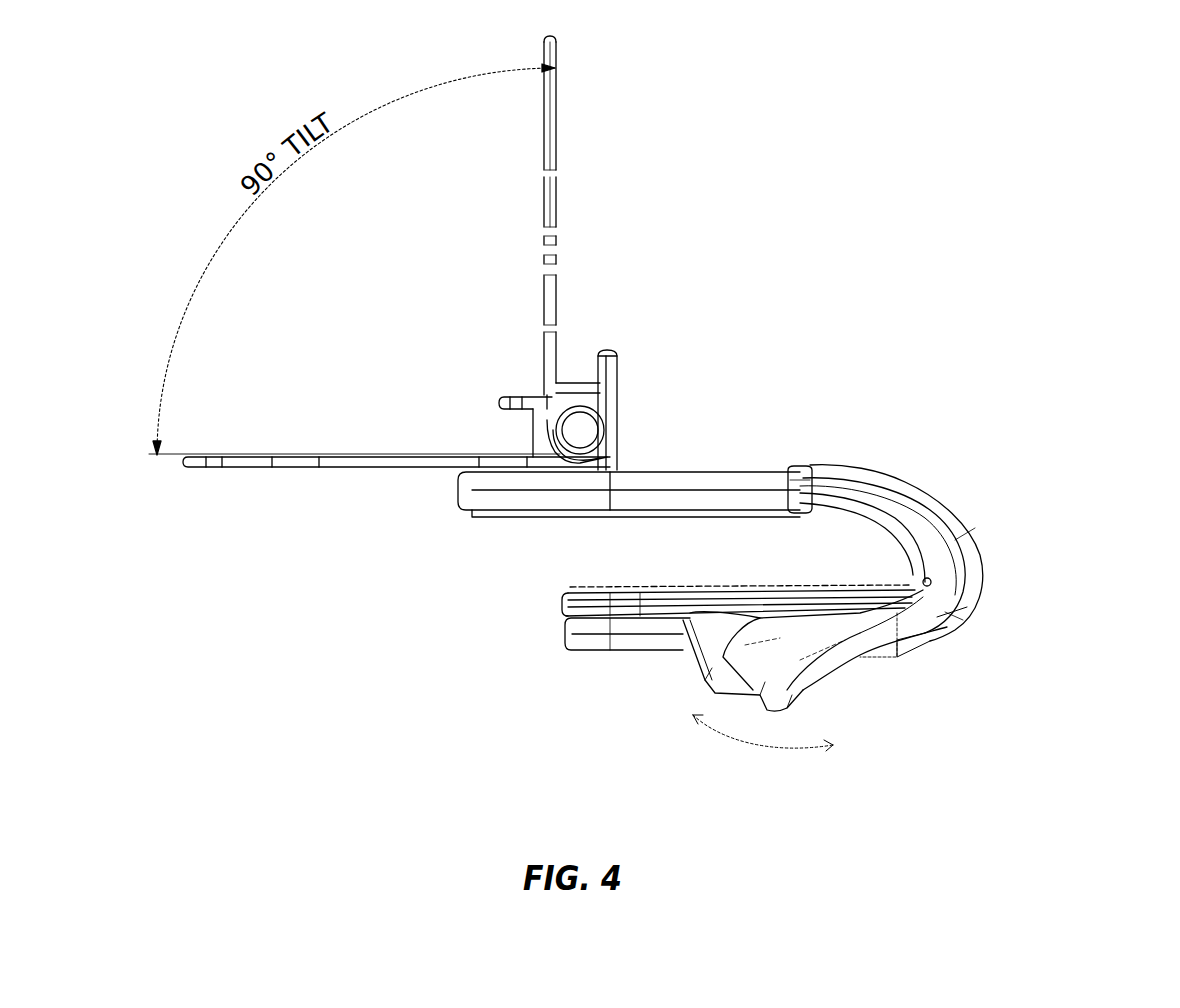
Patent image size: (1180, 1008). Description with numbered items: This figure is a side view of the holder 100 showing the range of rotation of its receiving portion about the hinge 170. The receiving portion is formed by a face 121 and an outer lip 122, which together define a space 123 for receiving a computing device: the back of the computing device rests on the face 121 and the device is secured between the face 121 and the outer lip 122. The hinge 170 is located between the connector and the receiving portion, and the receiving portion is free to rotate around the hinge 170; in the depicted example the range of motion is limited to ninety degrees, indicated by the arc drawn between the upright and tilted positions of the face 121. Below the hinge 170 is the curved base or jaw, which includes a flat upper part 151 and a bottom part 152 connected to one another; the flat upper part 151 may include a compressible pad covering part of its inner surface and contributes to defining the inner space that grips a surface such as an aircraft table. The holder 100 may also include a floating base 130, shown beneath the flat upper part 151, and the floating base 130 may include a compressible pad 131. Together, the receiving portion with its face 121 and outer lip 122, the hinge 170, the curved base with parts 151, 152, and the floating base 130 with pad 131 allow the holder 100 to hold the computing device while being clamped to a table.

The holder 100 is at (1028, 125).
The face 121 is at (572, 129).
The outer lip 122 is at (627, 363).
The space 123 is at (583, 360).
The hinge 170 is at (578, 443).
The flat upper part 151 is at (752, 477).
The bottom part 152 is at (933, 497).
The floating base 130 is at (550, 613).
The compressible pad 131 is at (562, 588).